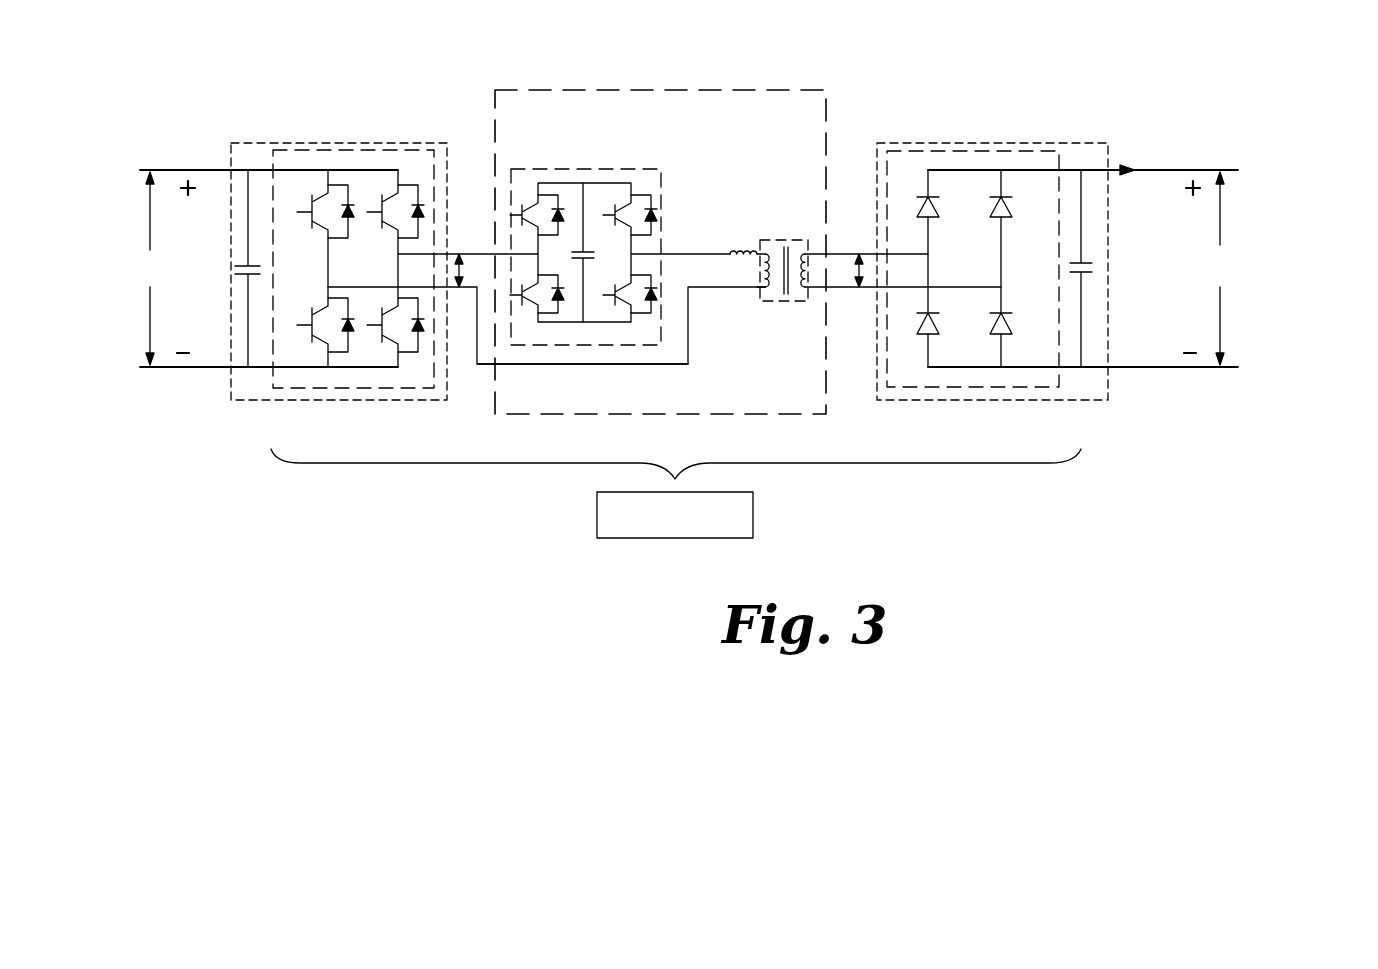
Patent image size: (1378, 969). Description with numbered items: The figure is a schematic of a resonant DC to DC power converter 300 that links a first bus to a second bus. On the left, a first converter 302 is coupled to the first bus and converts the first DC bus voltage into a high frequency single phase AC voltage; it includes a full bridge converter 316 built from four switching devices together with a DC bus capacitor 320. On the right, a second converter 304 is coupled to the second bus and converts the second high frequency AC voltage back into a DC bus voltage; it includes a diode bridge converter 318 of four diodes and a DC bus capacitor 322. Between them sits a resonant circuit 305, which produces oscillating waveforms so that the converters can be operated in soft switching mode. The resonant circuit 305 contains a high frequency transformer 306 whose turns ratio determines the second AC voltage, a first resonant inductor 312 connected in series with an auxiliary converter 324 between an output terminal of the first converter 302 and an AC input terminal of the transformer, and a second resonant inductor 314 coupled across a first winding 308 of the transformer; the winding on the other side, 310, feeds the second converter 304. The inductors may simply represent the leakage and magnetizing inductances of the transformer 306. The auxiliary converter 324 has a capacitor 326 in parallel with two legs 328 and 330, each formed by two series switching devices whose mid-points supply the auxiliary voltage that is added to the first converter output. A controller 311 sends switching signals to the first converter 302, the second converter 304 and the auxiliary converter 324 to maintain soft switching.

The DC to DC power converter 300 is at (229, 104).
The first converter 302 is at (344, 126).
The second converter 304 is at (977, 128).
The resonant circuit 305 is at (826, 88).
The high frequency transformer 306 is at (851, 262).
The first winding 308 is at (786, 293).
The secondary winding 310 is at (800, 262).
The controller 311 is at (753, 523).
The first resonant inductor 312 is at (733, 252).
The second resonant inductor 314 is at (762, 282).
The full bridge converter 316 is at (355, 389).
The diode bridge converter 318 is at (983, 388).
The DC bus capacitor 320 is at (247, 265).
The DC bus capacitor 322 is at (1089, 262).
The auxiliary converter 324 is at (614, 229).
The capacitor 326 is at (583, 196).
The leg 328 is at (536, 198).
The leg 330 is at (645, 318).